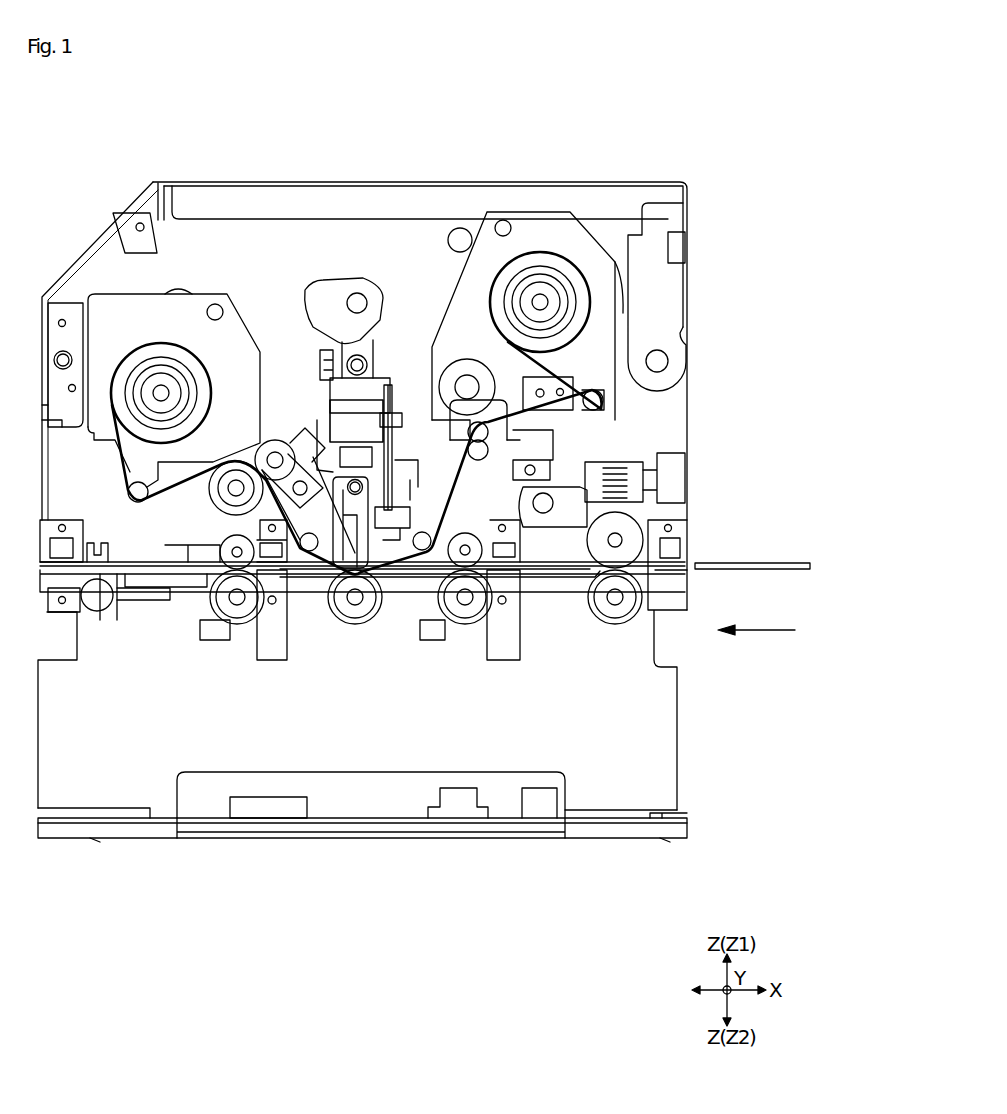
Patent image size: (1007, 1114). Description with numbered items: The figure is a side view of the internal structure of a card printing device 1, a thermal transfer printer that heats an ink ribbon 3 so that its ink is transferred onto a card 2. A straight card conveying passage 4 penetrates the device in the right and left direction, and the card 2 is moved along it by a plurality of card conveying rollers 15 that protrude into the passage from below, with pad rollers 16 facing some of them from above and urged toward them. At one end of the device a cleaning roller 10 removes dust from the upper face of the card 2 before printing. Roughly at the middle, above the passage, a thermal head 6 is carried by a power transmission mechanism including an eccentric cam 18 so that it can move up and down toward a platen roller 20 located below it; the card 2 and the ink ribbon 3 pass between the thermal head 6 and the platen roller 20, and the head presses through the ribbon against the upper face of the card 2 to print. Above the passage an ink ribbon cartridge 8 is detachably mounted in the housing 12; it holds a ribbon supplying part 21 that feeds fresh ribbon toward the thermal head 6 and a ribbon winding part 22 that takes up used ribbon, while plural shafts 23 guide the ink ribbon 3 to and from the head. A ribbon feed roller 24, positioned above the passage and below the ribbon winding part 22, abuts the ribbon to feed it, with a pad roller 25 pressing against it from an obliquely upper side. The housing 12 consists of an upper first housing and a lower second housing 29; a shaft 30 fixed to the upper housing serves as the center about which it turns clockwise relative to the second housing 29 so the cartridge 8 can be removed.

The card printing device 1 is at (90, 180).
The card 2 is at (781, 563).
The ink ribbon 3 is at (408, 572).
The card conveying passage 4 is at (548, 580).
The thermal head 6 is at (341, 548).
The ink ribbon cartridge 8 is at (447, 298).
The cleaning roller 10 is at (588, 552).
The housing 12 is at (685, 272).
The card conveying rollers 15 is at (237, 623).
The pad rollers 16 is at (225, 545).
The eccentric cam 18 is at (345, 285).
The platen roller 20 is at (360, 625).
The ribbon supplying part 21 is at (540, 258).
The ribbon winding part 22 is at (152, 345).
The shafts 23 is at (596, 388).
The ribbon feed roller 24 is at (212, 492).
The pad roller 25 is at (277, 437).
The second housing 29 is at (680, 713).
The shaft 30 is at (670, 358).